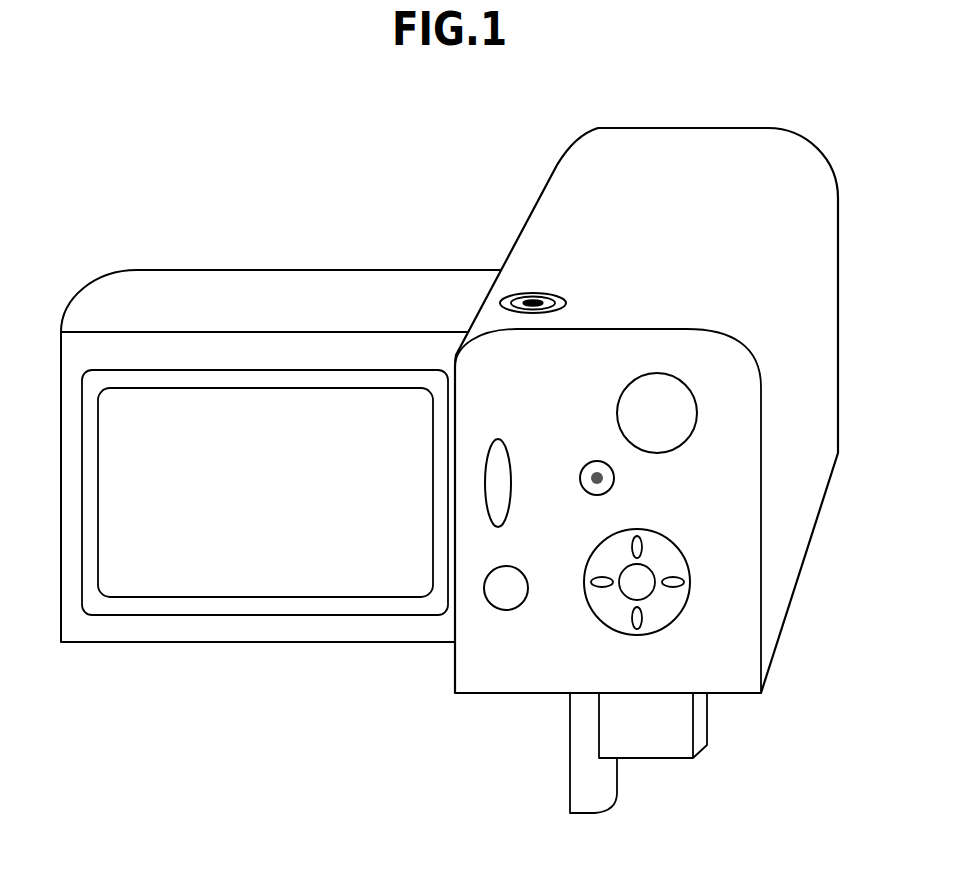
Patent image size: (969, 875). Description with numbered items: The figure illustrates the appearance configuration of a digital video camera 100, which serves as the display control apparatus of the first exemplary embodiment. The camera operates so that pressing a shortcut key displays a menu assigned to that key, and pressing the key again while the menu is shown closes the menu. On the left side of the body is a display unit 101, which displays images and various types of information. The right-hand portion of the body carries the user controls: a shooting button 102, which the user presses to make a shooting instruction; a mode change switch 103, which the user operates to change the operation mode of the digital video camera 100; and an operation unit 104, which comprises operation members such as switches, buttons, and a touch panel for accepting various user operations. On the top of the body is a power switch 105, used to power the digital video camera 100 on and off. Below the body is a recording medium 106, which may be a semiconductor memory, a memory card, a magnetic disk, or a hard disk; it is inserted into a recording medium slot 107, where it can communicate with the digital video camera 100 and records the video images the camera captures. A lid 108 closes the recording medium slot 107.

The digital video camera 100 is at (277, 670).
The display unit 101 is at (213, 410).
The shooting button 102 is at (500, 439).
The mode change switch 103 is at (660, 372).
The operation unit 104 is at (615, 473).
The power switch 105 is at (533, 292).
The recording medium 106 is at (683, 727).
The recording medium slot 107 is at (620, 695).
The lid 108 is at (620, 795).